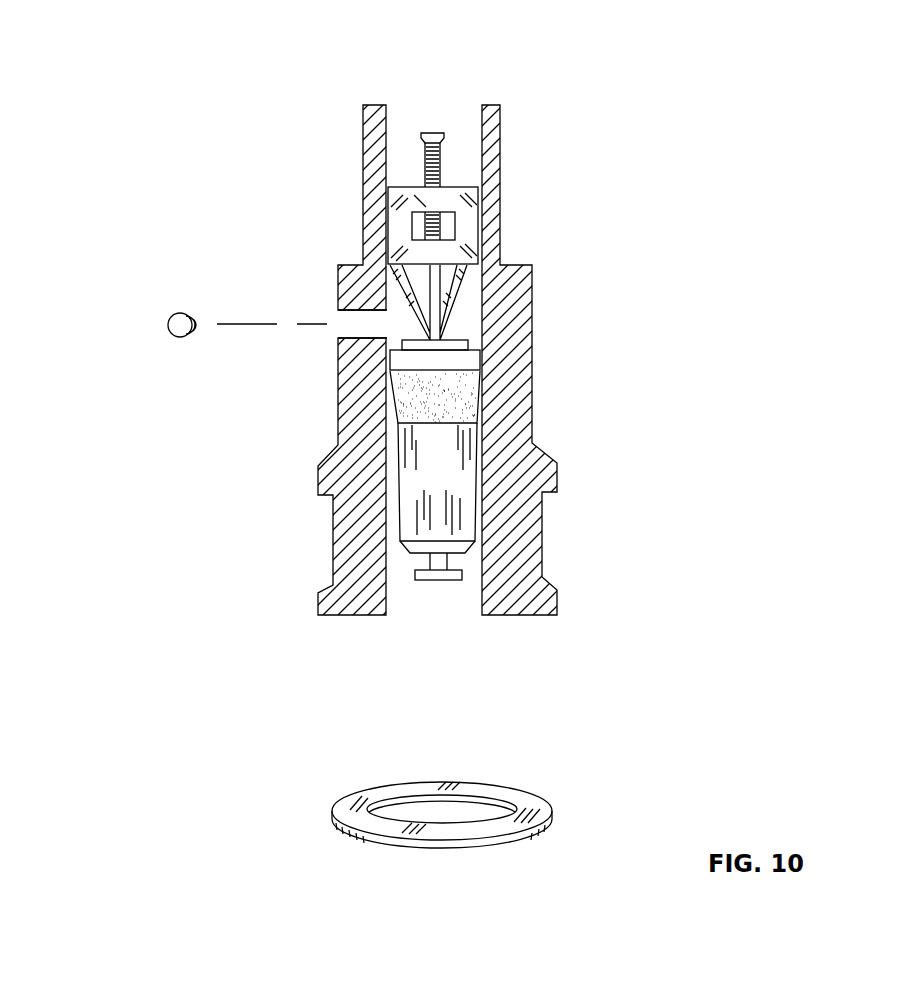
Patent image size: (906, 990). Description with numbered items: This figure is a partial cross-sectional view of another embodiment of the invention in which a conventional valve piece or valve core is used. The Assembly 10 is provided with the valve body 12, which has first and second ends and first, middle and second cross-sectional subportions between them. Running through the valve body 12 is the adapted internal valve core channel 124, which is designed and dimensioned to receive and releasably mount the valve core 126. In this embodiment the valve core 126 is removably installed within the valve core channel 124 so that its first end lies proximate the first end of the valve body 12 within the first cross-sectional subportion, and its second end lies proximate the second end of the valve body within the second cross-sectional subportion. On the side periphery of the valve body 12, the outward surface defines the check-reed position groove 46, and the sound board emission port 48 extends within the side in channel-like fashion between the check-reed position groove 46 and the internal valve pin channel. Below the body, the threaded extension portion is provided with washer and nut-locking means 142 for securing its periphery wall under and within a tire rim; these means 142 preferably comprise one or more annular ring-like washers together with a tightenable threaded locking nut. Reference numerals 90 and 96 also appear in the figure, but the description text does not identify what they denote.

The Assembly 10 is at (423, 357).
The valve body 12 is at (262, 434).
The check-reed position groove 46 is at (337, 335).
The sound board emission port 48 is at (337, 318).
The plunger 90 is at (535, 0).
The handle 96 is at (322, 0).
The internal valve core channel 124 is at (464, 130).
The valve core 126 is at (426, 198).
The washer and nut-locking means 142 is at (595, 775).